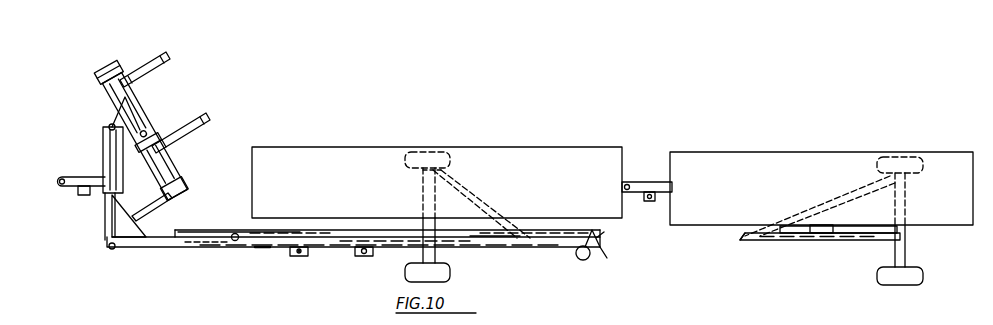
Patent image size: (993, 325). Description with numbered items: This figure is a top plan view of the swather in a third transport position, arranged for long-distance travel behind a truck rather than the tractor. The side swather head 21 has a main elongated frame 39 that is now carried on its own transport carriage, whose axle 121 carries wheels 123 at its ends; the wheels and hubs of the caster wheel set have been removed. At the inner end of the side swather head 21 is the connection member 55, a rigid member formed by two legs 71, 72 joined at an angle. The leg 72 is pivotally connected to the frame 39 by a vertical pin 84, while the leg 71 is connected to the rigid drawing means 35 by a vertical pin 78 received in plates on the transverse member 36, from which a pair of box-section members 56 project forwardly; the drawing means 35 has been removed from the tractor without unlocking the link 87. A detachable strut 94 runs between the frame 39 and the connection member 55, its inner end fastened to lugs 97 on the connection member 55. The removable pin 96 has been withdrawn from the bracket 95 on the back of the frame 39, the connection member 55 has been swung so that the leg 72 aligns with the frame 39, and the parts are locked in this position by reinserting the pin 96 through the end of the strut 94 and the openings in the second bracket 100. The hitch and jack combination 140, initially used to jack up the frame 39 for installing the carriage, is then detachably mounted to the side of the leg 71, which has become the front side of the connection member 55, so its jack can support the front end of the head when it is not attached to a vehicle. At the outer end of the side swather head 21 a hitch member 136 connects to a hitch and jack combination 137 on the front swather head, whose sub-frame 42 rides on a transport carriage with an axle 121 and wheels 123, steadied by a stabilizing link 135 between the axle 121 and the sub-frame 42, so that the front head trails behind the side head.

The side swather head 21 is at (348, 149).
The rigid drawing means 35 is at (171, 115).
The transverse member 36 is at (141, 117).
The main elongated frame 39 is at (483, 245).
The sub-frame 42 is at (835, 243).
The connection member 55 is at (195, 218).
The members 56 is at (158, 66).
The leg 71 is at (118, 188).
The leg 72 is at (202, 235).
The vertical pin 78 is at (108, 128).
The vertical pin 84 is at (234, 241).
The link 87 is at (152, 216).
The strut 94 is at (262, 249).
The bracket 95 is at (371, 256).
The removable pin 96 is at (299, 256).
The lugs 97 is at (112, 250).
The second bracket 100 is at (310, 252).
The axle 121 is at (910, 256).
The wheels 123 is at (905, 165).
The stabilizing link 135 is at (780, 227).
The hitch member 136 is at (626, 180).
The hitch and jack combination 137 is at (663, 194).
The hitch and jack combination 140 is at (100, 196).